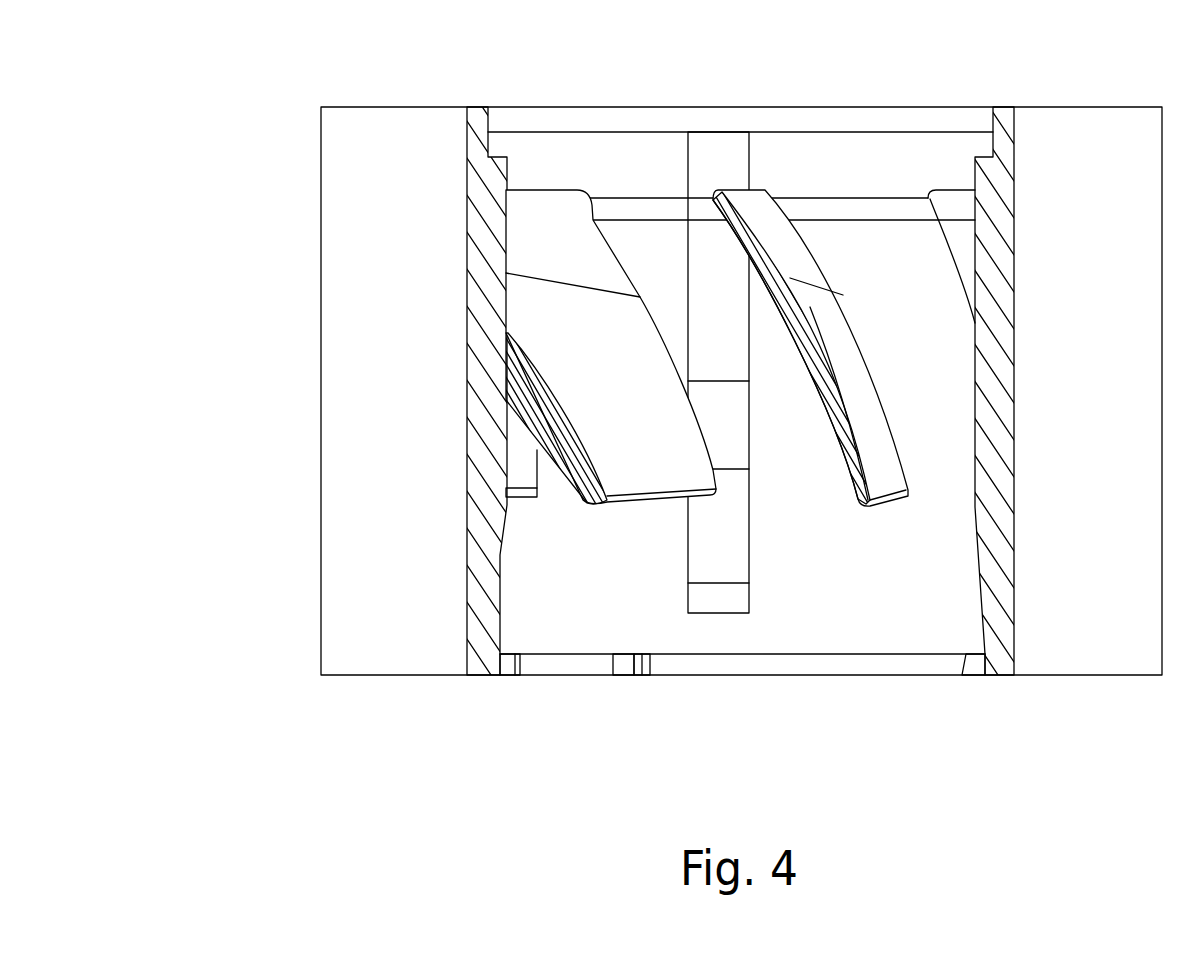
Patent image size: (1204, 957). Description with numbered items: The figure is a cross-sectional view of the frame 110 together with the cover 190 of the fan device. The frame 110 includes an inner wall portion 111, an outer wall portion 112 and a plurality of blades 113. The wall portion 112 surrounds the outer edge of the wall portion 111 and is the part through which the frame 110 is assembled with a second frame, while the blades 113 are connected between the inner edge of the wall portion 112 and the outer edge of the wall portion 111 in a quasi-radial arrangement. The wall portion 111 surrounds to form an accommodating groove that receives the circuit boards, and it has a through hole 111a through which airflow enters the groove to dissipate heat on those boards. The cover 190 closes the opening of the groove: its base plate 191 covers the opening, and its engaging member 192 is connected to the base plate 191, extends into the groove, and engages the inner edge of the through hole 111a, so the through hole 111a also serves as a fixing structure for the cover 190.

The frame 110 is at (252, 76).
The wall portion 111 is at (525, 570).
The through hole 111a is at (756, 538).
The wall portion 112 is at (337, 243).
The blades 113 is at (557, 440).
The cover 190 is at (742, 696).
The base plate 191 is at (670, 665).
The engaging member 192 is at (725, 604).